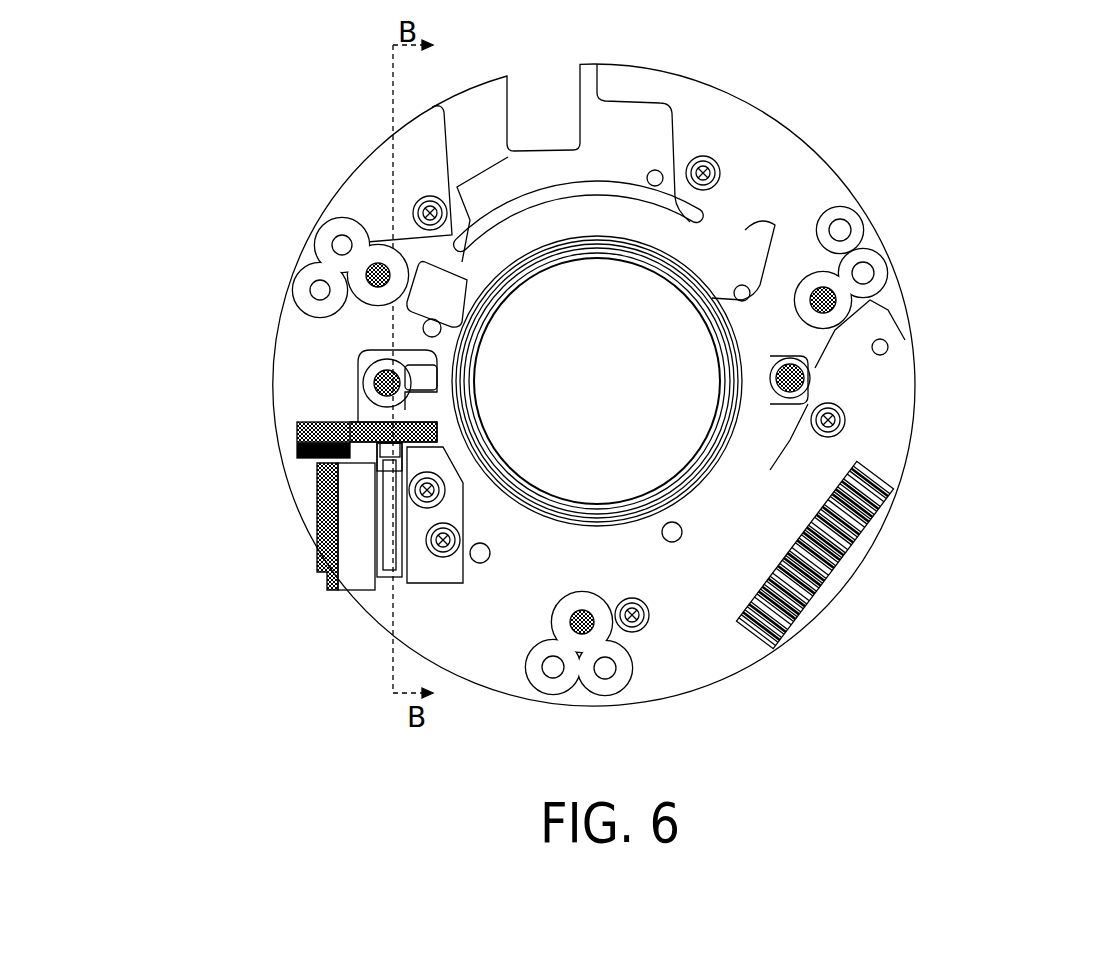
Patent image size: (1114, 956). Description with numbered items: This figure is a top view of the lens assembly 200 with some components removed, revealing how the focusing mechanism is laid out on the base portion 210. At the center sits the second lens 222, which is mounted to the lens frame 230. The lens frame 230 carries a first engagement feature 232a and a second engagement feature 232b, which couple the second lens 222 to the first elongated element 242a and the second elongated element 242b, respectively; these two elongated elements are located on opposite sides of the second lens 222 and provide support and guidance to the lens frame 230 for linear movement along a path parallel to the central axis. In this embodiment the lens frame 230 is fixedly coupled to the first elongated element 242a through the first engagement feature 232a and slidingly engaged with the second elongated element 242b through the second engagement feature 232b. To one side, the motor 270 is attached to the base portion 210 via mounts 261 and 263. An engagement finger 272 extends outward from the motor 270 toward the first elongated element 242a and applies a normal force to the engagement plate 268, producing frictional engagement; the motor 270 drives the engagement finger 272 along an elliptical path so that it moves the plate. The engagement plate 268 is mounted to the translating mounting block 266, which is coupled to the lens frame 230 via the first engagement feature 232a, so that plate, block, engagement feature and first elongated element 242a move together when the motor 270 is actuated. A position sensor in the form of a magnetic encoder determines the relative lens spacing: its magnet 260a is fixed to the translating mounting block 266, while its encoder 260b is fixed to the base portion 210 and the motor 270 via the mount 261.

The lens assembly 200 is at (183, 125).
The base portion 210 is at (827, 600).
The second lens 222 is at (668, 338).
The lens frame 230 is at (670, 270).
The first engagement feature 232a is at (360, 380).
The second engagement feature 232b is at (758, 382).
The first elongated element 242a is at (387, 383).
The second elongated element 242b is at (800, 378).
The magnet 260a is at (387, 450).
The encoder 260b is at (325, 535).
The mount 261 is at (360, 567).
The mount 263 is at (440, 575).
The translating mounting block 266 is at (320, 437).
The engagement plate 268 is at (383, 437).
The motor 270 is at (393, 530).
The engagement finger 272 is at (378, 455).